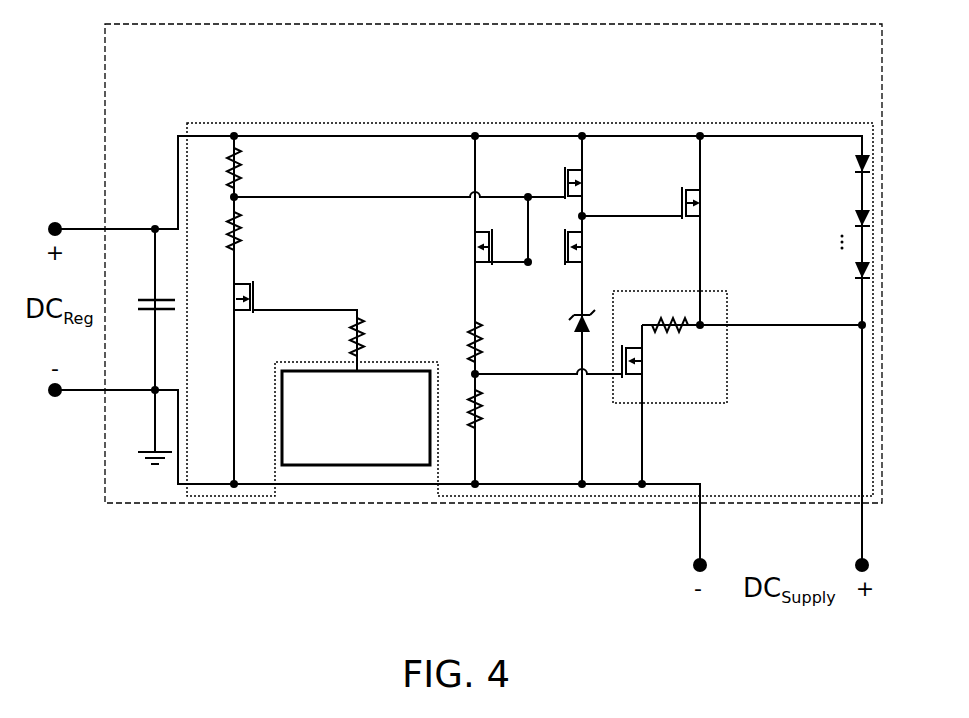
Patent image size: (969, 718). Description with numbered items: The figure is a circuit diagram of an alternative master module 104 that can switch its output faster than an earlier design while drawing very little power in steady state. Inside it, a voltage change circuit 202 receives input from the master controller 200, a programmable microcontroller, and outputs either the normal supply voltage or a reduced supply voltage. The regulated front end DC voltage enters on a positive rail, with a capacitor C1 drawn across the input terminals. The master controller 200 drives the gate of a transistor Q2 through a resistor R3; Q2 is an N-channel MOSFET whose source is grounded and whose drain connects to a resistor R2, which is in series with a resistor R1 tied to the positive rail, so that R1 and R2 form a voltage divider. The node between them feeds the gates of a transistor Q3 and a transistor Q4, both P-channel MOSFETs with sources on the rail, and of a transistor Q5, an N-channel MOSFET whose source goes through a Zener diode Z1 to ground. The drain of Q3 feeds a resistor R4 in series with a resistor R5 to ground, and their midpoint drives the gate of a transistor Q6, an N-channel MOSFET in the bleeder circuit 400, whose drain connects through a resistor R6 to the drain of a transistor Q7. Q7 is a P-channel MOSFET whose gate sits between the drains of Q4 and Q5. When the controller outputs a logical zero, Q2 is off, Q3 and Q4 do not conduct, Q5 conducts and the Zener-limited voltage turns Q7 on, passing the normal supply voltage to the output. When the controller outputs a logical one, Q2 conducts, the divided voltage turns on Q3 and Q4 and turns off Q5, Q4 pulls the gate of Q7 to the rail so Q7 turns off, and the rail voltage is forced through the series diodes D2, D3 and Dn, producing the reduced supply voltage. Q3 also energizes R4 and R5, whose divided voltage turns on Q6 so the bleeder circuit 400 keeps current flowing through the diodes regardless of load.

The master module 104 is at (221, 86).
The voltage change circuit 202 is at (186, 167).
The master controller 200 is at (335, 460).
The bleeder circuit 400 is at (715, 291).
The resistor R1 is at (219, 168).
The resistor R2 is at (219, 231).
The resistor R3 is at (341, 337).
The resistor R4 is at (458, 342).
The resistor R5 is at (495, 409).
The resistor R6 is at (670, 315).
The capacitor C1 is at (142, 303).
The transistor Q2 is at (225, 297).
The transistor Q3 is at (481, 247).
The transistor Q4 is at (590, 183).
The transistor Q5 is at (590, 247).
The transistor Q6 is at (647, 361).
The transistor Q7 is at (709, 203).
The Zener diode Z1 is at (570, 323).
The diode D2 is at (847, 165).
The diode D3 is at (847, 218).
The diode Dn is at (847, 270).